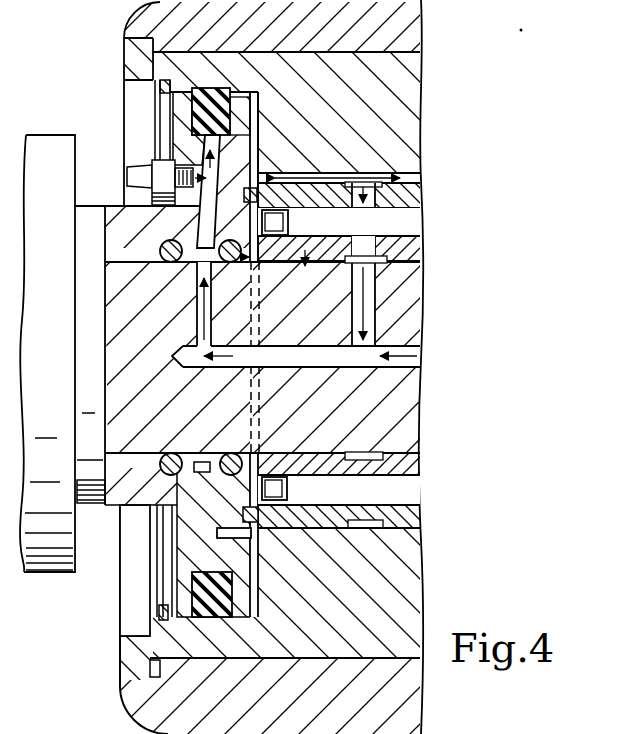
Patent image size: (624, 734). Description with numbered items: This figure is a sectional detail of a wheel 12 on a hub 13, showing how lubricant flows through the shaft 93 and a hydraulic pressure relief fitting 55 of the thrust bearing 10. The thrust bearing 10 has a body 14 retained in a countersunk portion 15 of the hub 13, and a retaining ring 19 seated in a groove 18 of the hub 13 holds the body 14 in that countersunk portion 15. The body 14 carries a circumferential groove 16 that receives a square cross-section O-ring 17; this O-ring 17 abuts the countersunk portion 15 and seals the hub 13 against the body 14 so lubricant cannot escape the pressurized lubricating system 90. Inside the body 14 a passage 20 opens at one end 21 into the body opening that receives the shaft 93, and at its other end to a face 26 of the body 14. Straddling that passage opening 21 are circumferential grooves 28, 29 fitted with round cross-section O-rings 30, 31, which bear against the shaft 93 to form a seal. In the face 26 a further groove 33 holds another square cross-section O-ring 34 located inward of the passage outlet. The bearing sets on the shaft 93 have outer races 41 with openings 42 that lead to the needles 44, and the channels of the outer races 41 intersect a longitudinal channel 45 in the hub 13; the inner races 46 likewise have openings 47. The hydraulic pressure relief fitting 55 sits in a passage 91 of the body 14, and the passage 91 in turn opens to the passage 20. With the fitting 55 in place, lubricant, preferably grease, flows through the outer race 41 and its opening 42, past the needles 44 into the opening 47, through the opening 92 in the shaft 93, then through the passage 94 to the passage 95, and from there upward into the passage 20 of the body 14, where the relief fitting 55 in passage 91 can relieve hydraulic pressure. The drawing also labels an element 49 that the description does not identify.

The thrust bearing 10 is at (114, 503).
The wheel 12 is at (121, 707).
The hub 13 is at (318, 588).
The body 14 is at (247, 598).
The countersunk portion 15 is at (252, 618).
The circumferential groove 16 is at (246, 97).
The square cross-section O-ring 17 is at (212, 87).
The groove 18 is at (168, 78).
The retaining ring 19 is at (160, 96).
The passage 20 is at (221, 143).
The end of passage 21 is at (218, 304).
The face 26 is at (257, 545).
The circumferential groove 28 is at (161, 471).
The circumferential groove 29 is at (230, 474).
The round cross-section O-ring 30 is at (175, 262).
The round cross-section O-ring 31 is at (219, 263).
The groove 33 is at (243, 515).
The square cross-section O-ring 34 is at (250, 192).
The outer race 41 is at (339, 194).
The opening 42 is at (376, 195).
The needles 44 is at (408, 501).
The longitudinal channel 45 is at (384, 167).
The inner race 46 is at (330, 270).
The opening 47 is at (376, 250).
The spacer 49 is at (284, 223).
The hydraulic pressure relief fitting 55 is at (129, 172).
The pressurized lubricating system 90 is at (120, 620).
The passage 91 is at (192, 195).
The opening 92 is at (380, 295).
The shaft 93 is at (300, 419).
The passage 94 is at (388, 366).
The passage 95 is at (194, 320).